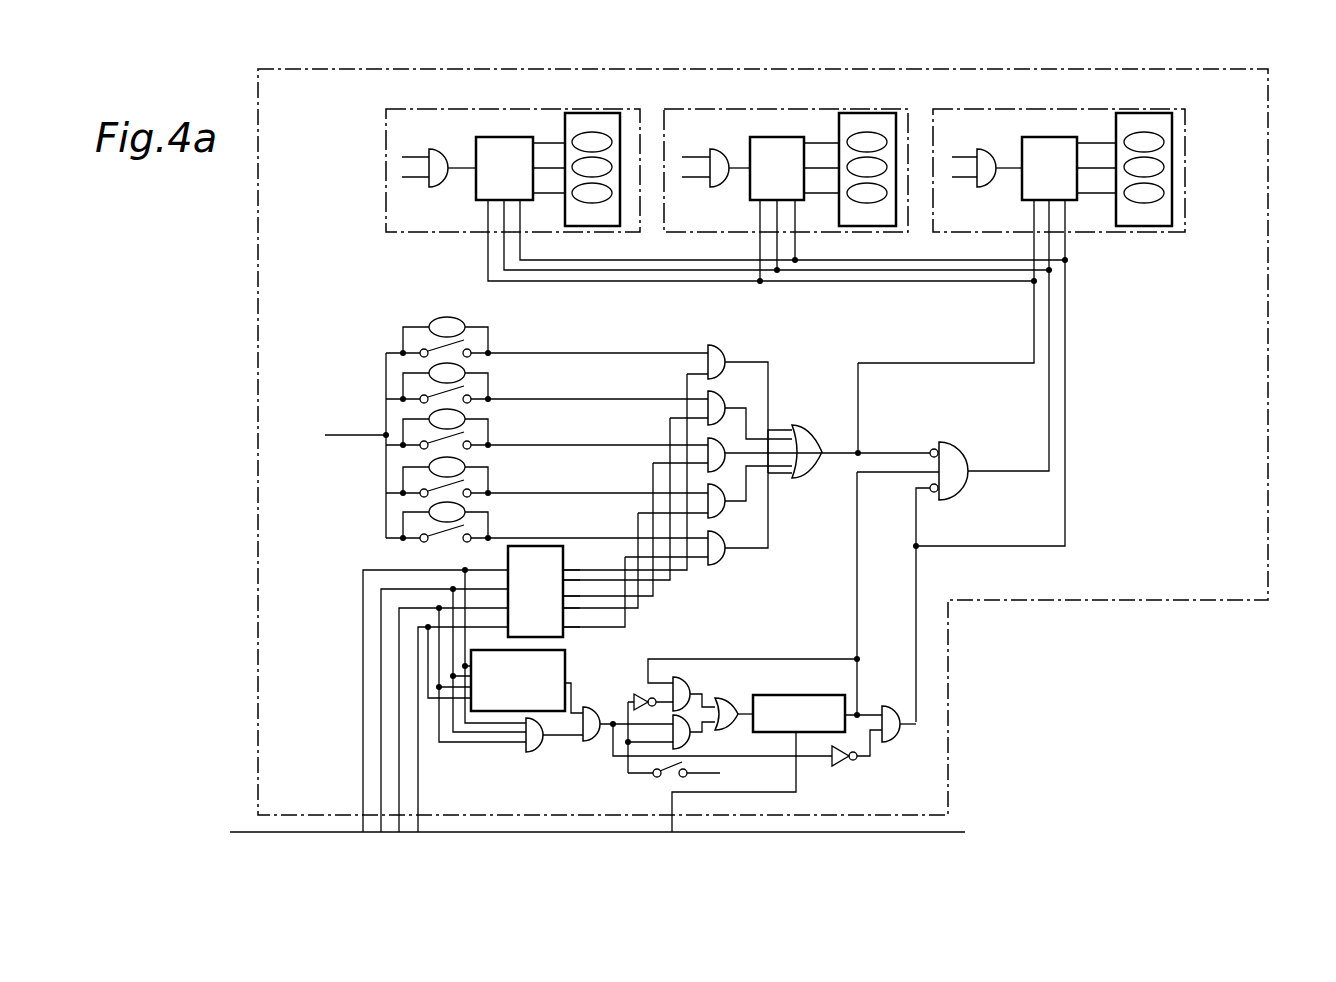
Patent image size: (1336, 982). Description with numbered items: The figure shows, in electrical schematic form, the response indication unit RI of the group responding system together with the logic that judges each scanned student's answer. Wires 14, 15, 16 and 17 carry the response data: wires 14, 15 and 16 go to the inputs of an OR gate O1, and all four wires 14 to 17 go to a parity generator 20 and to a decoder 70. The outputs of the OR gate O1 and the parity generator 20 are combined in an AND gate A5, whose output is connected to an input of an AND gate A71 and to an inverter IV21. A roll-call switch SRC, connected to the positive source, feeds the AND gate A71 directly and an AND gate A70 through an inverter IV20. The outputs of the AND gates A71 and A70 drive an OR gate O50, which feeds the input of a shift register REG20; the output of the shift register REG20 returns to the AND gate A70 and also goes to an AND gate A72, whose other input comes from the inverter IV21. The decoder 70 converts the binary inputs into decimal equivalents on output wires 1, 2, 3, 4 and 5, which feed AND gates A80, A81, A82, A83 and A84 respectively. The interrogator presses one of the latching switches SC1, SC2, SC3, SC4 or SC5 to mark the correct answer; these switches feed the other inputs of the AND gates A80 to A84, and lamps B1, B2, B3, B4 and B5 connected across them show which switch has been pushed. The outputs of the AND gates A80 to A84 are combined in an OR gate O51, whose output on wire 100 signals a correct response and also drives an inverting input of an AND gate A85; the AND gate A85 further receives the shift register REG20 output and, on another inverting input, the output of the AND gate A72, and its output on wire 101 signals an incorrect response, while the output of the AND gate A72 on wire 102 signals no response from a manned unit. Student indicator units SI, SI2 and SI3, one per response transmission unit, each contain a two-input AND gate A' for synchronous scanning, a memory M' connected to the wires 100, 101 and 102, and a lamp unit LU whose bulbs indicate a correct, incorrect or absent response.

The response indication unit RI is at (1268, 343).
The student indicator unit SI is at (492, 108).
The student indicator unit SI2 is at (770, 108).
The student indicator unit SI3 is at (1040, 108).
The AND gate A' is at (709, 152).
The memory M' is at (762, 168).
The lamp unit LU is at (606, 113).
The wire 100 is at (1034, 297).
The wire 101 is at (1049, 325).
The wire 102 is at (1065, 352).
The latching switch SC1 is at (435, 349).
The latching switch SC2 is at (435, 395).
The latching switch SC3 is at (435, 438).
The latching switch SC4 is at (435, 489).
The latching switch SC5 is at (435, 534).
The lamp B1 is at (445, 335).
The lamp B2 is at (445, 381).
The lamp B3 is at (445, 427).
The lamp B4 is at (445, 475).
The lamp B5 is at (445, 520).
The AND gate A80 is at (735, 342).
The AND gate A81 is at (735, 388).
The AND gate A82 is at (727, 470).
The AND gate A83 is at (727, 516).
The AND gate A84 is at (727, 562).
The AND gate A85 is at (974, 436).
The OR gate O51 is at (799, 425).
The decoder 70 is at (535, 546).
The output wire 1 is at (572, 558).
The output wire 2 is at (575, 580).
The output wire 3 is at (578, 592).
The output wire 4 is at (576, 604).
The output wire 5 is at (573, 620).
The wire 14 is at (363, 686).
The wire 15 is at (381, 714).
The wire 16 is at (399, 742).
The wire 17 is at (418, 770).
The parity generator 20 is at (565, 651).
The OR gate O1 is at (538, 750).
The AND gate A5 is at (593, 741).
The inverter IV20 is at (629, 722).
The roll-call switch SRC is at (668, 778).
The AND gate A70 is at (690, 677).
The AND gate A71 is at (694, 744).
The OR gate O50 is at (722, 698).
The shift register REG20 is at (777, 763).
The inverter IV21 is at (843, 768).
The AND gate A72 is at (888, 706).